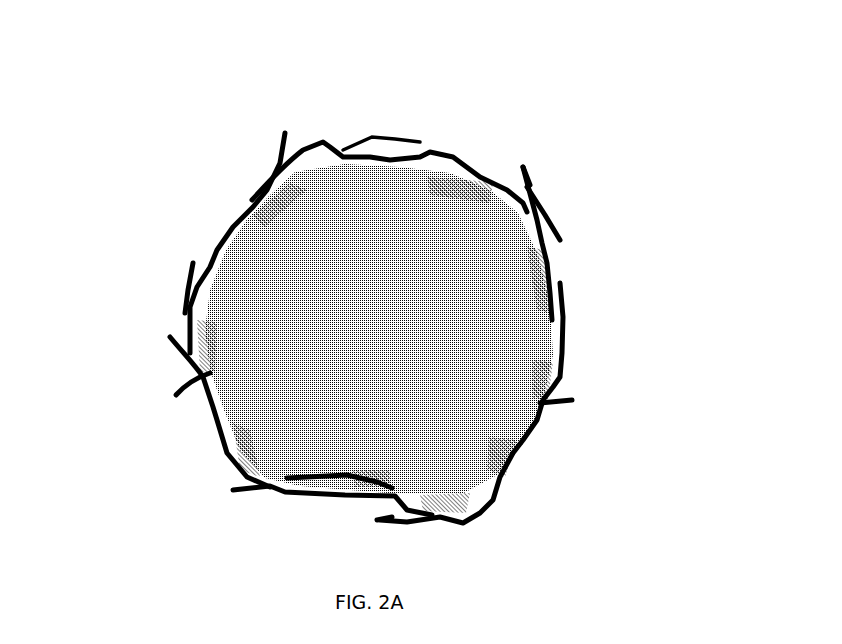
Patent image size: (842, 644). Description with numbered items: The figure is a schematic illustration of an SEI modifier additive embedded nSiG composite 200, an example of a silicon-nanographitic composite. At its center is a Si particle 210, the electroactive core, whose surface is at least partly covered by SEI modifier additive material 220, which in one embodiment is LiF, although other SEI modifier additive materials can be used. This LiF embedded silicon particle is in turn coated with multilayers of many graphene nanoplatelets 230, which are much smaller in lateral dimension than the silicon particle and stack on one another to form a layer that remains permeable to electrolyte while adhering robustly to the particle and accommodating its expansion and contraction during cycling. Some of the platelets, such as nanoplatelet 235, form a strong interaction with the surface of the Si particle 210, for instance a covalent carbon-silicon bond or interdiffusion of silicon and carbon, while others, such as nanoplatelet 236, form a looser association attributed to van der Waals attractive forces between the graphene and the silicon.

The SEI modifier additive embedded nSiG composite 200 is at (170, 164).
The Si particle 210 is at (502, 318).
The SEI modifier additive material 220 is at (558, 387).
The graphene nanoplatelets 230 is at (210, 373).
The nanoplatelet 235 is at (417, 153).
The nanoplatelet 236 is at (552, 178).